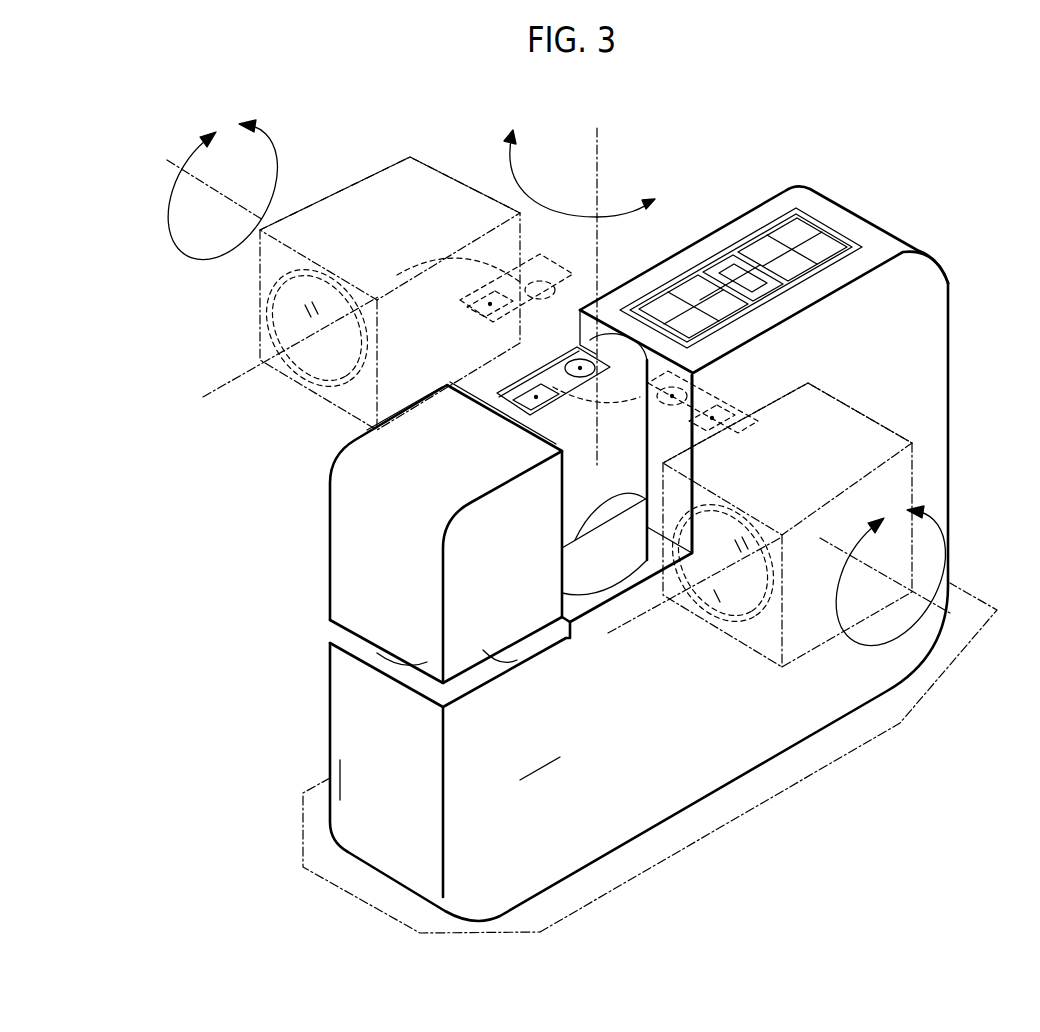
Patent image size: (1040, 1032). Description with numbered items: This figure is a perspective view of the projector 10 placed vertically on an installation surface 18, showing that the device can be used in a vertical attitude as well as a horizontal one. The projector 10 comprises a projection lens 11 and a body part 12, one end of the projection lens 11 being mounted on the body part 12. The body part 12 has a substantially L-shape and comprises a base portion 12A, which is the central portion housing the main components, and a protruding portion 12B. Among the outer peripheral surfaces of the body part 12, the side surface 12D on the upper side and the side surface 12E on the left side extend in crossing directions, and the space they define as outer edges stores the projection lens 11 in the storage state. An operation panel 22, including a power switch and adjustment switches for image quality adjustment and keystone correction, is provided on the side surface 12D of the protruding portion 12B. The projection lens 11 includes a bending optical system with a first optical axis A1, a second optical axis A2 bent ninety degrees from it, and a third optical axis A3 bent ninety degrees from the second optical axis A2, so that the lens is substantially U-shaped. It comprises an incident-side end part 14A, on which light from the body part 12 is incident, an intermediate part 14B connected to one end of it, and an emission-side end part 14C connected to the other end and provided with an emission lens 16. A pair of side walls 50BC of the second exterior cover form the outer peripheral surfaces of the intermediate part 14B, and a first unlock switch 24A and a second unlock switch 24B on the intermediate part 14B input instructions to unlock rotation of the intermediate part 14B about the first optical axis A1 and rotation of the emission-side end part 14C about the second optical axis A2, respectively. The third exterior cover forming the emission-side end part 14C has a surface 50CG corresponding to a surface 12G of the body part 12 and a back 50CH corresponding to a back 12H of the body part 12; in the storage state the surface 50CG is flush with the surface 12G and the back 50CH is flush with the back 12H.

The projector 10 is at (256, 656).
The projection lens 11 is at (413, 157).
The body part 12 is at (340, 722).
The base portion 12A is at (938, 502).
The protruding portion 12B is at (937, 295).
The side surface 12D is at (768, 210).
The side surface 12E is at (417, 780).
The surface 12G is at (557, 775).
The back 12H is at (330, 763).
The incident-side end part 14A is at (592, 549).
The intermediate part 14B is at (612, 417).
The emission-side end part 14C is at (358, 175).
The emission lens 16 is at (290, 321).
The installation surface 18 is at (900, 728).
The operation panel 22 is at (847, 211).
The first unlock switch 24A is at (570, 366).
The second unlock switch 24B is at (512, 390).
The side walls 50BC is at (557, 490).
The surface 50CG is at (460, 583).
The back 50CH is at (340, 452).
The first optical axis A1 is at (600, 133).
The second optical axis A2 is at (166, 171).
The third optical axis A3 is at (222, 388).